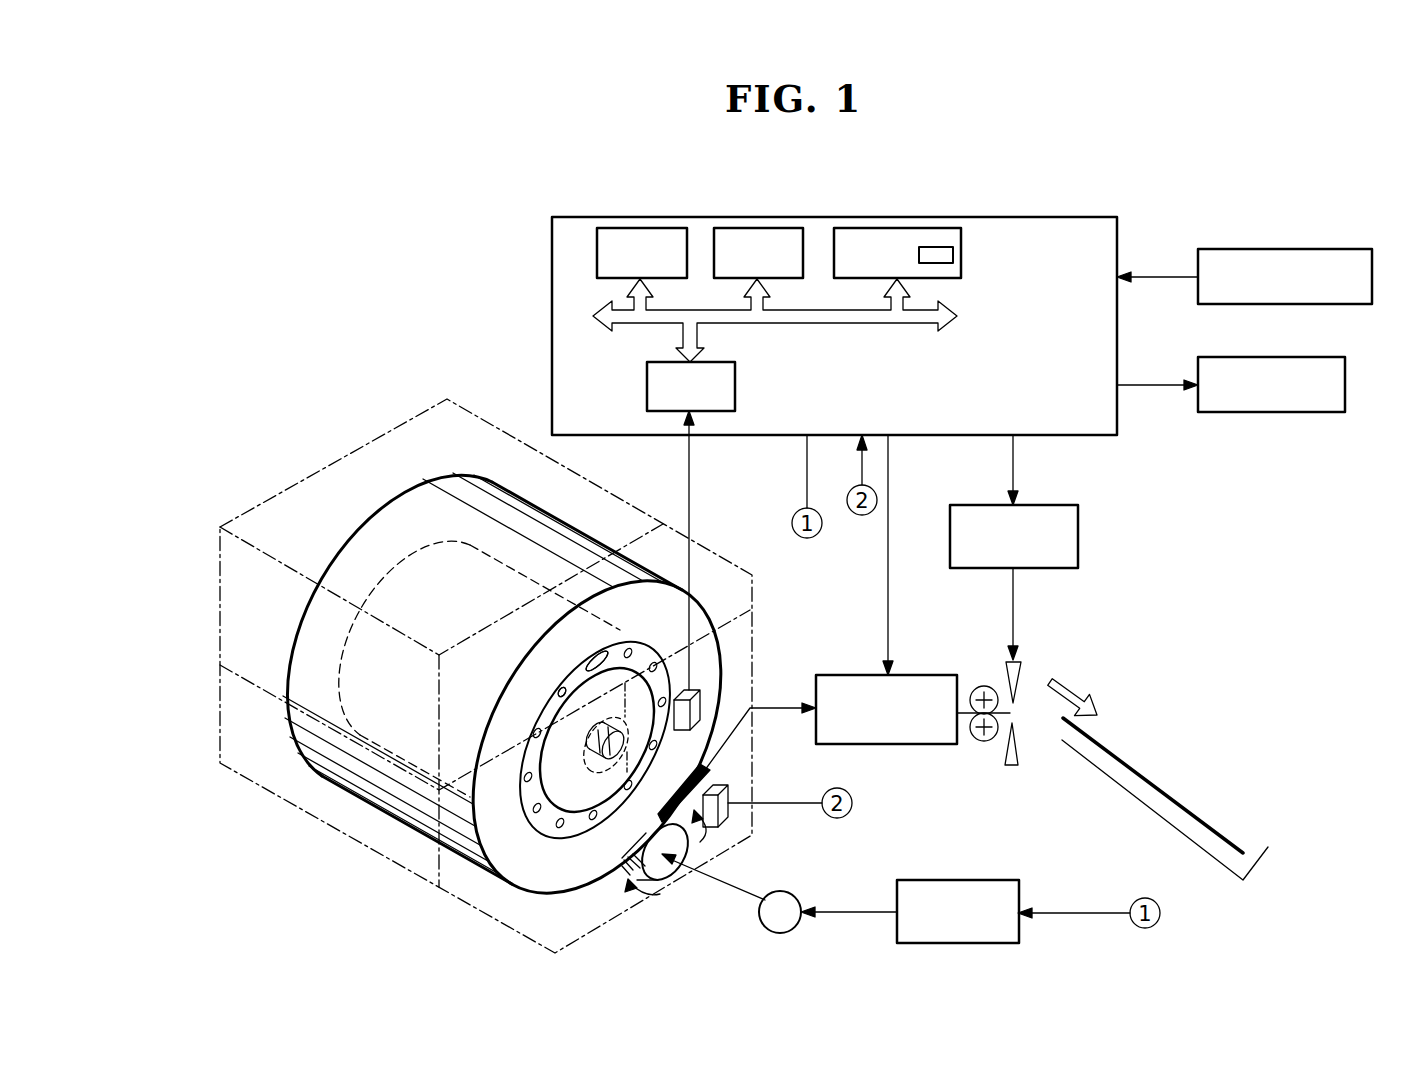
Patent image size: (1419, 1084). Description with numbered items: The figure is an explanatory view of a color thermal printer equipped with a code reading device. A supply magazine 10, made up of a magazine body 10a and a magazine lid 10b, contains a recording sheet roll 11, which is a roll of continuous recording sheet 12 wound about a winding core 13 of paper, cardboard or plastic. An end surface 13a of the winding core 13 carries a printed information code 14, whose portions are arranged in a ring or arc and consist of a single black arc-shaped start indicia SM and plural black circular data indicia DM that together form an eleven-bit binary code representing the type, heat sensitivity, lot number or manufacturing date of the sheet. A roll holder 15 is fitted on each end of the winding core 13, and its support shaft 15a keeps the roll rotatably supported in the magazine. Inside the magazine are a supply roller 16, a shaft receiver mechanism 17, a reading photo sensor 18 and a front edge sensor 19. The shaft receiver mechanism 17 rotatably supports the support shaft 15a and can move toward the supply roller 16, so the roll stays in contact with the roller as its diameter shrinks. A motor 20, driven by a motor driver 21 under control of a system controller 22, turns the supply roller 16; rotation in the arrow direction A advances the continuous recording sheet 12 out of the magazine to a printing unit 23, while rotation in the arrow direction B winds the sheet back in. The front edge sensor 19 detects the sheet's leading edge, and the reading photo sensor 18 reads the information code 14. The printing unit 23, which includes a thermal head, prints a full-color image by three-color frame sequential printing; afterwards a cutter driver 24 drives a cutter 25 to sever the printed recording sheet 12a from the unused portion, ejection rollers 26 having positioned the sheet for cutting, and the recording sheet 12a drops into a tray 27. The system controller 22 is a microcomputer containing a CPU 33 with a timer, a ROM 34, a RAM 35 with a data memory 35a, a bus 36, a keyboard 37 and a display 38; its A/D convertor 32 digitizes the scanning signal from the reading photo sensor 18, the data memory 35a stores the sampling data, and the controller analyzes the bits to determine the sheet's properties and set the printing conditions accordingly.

The supply magazine 10 is at (416, 414).
The magazine body 10a is at (272, 792).
The magazine lid 10b is at (278, 494).
The recording sheet roll 11 is at (493, 463).
The continuous recording sheet 12 is at (347, 535).
The recording sheet 12a is at (1150, 785).
The winding core 13 is at (430, 540).
The end surface 13a is at (577, 826).
The information code 14 is at (492, 799).
The roll holder 15 is at (567, 730).
The support shaft 15a is at (524, 724).
The supply roller 16 is at (655, 828).
The shaft receiver mechanism 17 is at (644, 652).
The reading photo sensor 18 is at (702, 703).
The front edge sensor 19 is at (729, 791).
The motor 20 is at (797, 893).
The motor driver 21 is at (955, 880).
The system controller 22 is at (1072, 217).
The printing unit 23 is at (927, 675).
The cutter driver 24 is at (1058, 505).
The cutter 25 is at (1020, 678).
The ejection rollers 26 is at (984, 741).
The tray 27 is at (1136, 800).
The A/D convertor 32 is at (735, 381).
The CPU 33 is at (643, 228).
The ROM 34 is at (760, 228).
The RAM 35 is at (876, 228).
The data memory 35a is at (953, 255).
The bus 36 is at (866, 324).
The keyboard 37 is at (1273, 249).
The display 38 is at (1275, 412).
The start indicia SM is at (587, 668).
The data indicia DM is at (558, 691).
The arrow direction A is at (662, 895).
The arrow direction B is at (704, 842).